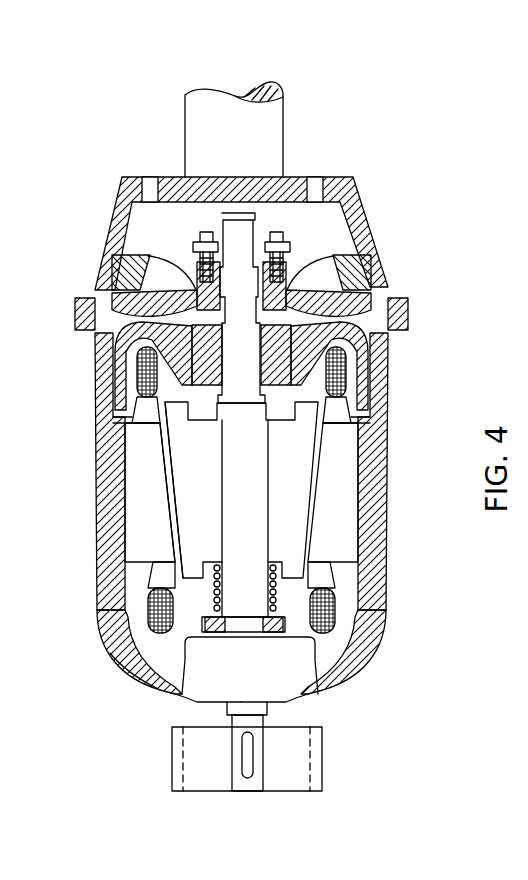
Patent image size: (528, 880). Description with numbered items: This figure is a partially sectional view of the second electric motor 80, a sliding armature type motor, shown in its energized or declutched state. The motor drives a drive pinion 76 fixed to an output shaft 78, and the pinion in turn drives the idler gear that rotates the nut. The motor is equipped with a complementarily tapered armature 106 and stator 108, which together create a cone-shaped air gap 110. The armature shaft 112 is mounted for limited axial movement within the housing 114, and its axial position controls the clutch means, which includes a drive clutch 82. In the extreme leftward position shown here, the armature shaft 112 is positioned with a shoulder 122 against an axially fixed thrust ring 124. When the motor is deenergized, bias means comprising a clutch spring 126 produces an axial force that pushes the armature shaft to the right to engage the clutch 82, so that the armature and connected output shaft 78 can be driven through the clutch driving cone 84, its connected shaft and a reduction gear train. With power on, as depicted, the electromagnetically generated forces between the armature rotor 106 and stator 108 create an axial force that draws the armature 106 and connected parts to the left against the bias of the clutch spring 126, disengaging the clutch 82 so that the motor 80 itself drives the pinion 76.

The drive pinion 76 is at (322, 760).
The output shaft 78 is at (250, 788).
The second electric motor 80 is at (397, 556).
The drive clutch 82 is at (91, 280).
The clutch driving cone 84 is at (114, 218).
The armature 106 is at (183, 512).
The stator 108 is at (130, 477).
The cone-shaped air gap 110 is at (312, 492).
The armature shaft 112 is at (248, 575).
The housing 114 is at (104, 652).
The shoulder 122 is at (243, 635).
The thrust ring 124 is at (285, 625).
The clutch spring 126 is at (212, 590).